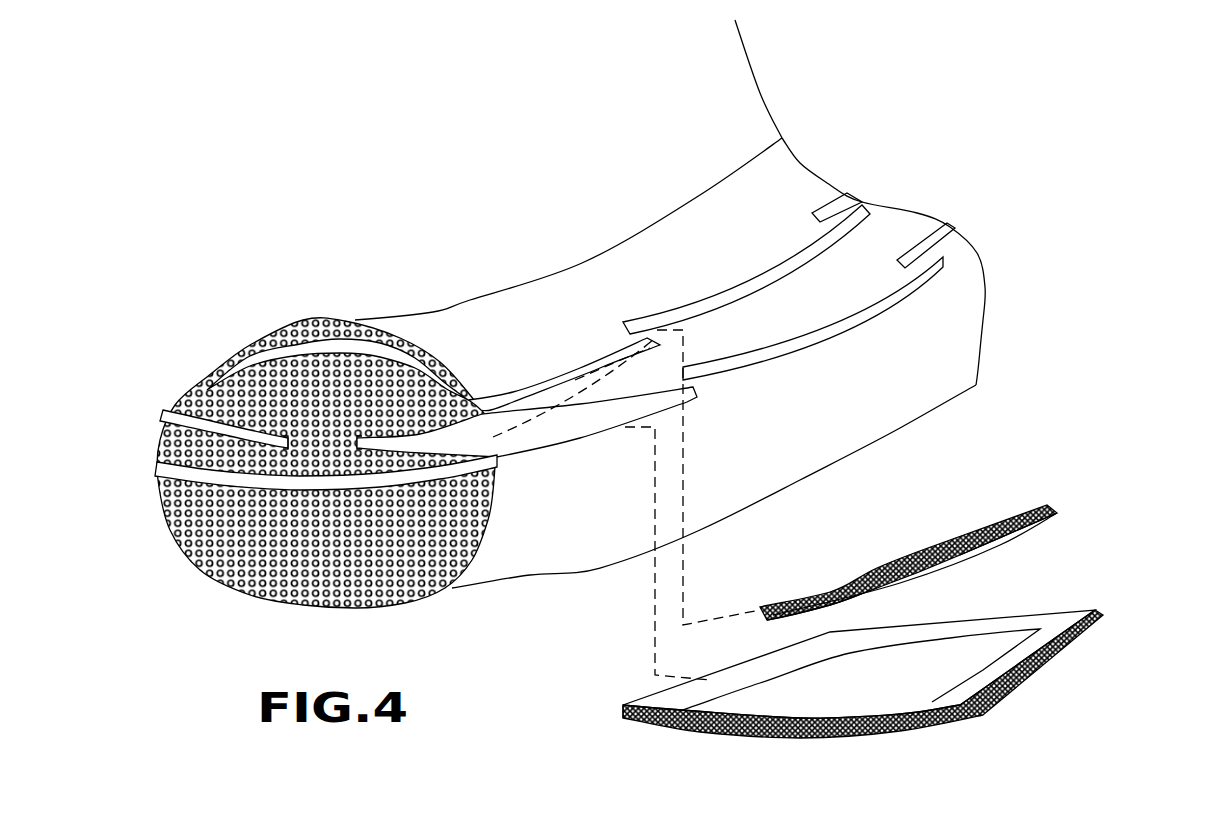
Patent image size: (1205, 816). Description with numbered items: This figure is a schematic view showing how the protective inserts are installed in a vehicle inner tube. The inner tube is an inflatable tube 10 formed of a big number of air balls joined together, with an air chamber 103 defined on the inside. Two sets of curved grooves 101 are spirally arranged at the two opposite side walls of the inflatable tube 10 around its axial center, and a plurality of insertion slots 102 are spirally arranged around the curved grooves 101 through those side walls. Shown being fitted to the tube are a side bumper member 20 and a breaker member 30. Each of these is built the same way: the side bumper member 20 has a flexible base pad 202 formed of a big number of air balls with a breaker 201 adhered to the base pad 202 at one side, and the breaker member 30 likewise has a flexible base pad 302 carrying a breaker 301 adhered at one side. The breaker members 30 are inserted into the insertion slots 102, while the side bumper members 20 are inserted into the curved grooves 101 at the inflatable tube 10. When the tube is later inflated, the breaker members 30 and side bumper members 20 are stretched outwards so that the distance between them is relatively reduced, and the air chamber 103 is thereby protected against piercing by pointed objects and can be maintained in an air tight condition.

The inflatable tube 10 is at (550, 240).
The curved grooves 101 is at (510, 400).
The insertion slots 102 is at (150, 497).
The air chamber 103 is at (300, 343).
The side bumper member 20 is at (967, 501).
The breaker 201 is at (831, 592).
The flexible base pad 202 is at (1025, 513).
The breaker member 30 is at (822, 646).
The breaker 301 is at (933, 657).
The flexible base pad 302 is at (667, 705).